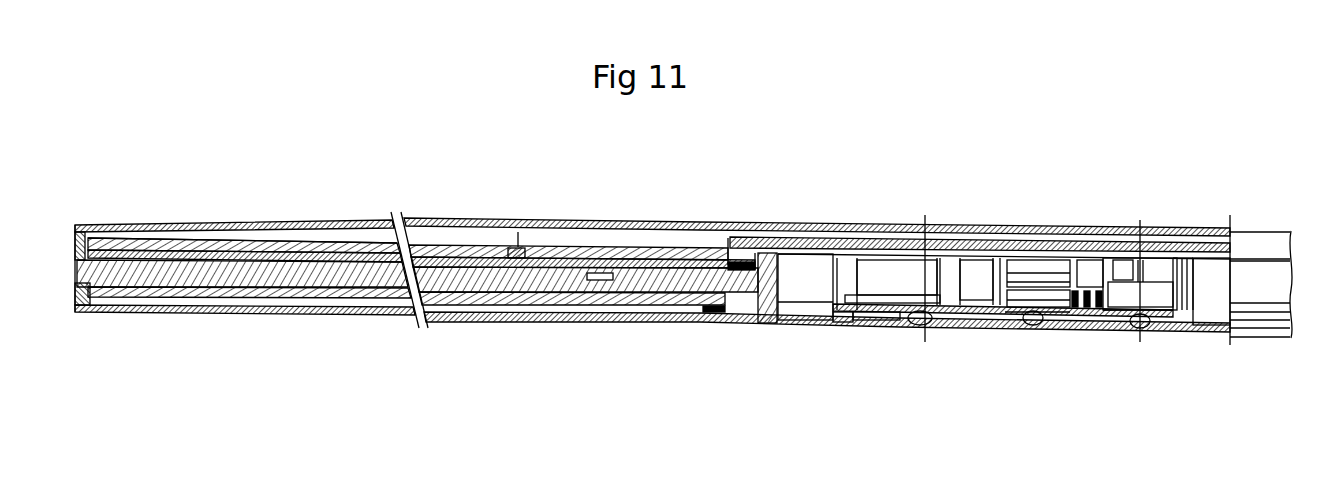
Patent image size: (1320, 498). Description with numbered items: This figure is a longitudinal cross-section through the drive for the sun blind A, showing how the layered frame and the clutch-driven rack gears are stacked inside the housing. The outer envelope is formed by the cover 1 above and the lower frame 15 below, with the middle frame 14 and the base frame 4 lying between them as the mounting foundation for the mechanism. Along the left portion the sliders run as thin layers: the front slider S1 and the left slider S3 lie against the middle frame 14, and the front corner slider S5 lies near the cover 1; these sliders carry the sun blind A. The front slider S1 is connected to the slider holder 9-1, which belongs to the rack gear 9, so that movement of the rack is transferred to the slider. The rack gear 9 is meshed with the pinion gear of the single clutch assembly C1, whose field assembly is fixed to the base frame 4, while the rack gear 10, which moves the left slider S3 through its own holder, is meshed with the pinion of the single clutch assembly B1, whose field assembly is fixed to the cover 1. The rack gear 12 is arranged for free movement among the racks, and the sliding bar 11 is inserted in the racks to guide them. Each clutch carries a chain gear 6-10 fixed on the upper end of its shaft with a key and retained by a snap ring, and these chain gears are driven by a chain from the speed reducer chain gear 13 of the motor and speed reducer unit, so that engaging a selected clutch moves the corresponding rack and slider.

The sun blind A is at (682, 220).
The lower frame 15 is at (195, 313).
The front corner slider S5 is at (236, 243).
The front slider S1 is at (340, 246).
The middle frame 14 is at (360, 278).
The left slider S3 is at (280, 295).
The rack gear 9 is at (880, 245).
The slider holder 9-1 is at (740, 262).
The cover 1 is at (1018, 240).
The base frame 4 is at (968, 310).
The speed reducer chain gear 13 is at (907, 320).
The chain gear 6-10 is at (1022, 333).
The single clutch assembly B1 is at (1055, 265).
The rack gear 10 is at (1072, 307).
The sliding bar 11 is at (1082, 310).
The rack gear 12 is at (1097, 310).
The single clutch assembly C1 is at (1152, 288).